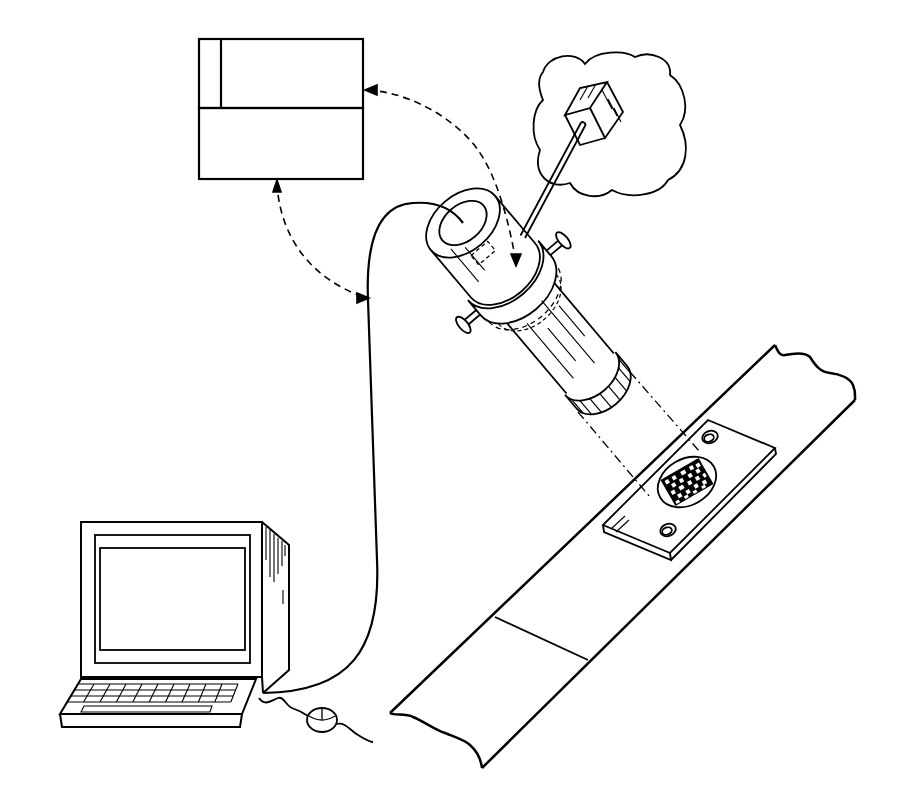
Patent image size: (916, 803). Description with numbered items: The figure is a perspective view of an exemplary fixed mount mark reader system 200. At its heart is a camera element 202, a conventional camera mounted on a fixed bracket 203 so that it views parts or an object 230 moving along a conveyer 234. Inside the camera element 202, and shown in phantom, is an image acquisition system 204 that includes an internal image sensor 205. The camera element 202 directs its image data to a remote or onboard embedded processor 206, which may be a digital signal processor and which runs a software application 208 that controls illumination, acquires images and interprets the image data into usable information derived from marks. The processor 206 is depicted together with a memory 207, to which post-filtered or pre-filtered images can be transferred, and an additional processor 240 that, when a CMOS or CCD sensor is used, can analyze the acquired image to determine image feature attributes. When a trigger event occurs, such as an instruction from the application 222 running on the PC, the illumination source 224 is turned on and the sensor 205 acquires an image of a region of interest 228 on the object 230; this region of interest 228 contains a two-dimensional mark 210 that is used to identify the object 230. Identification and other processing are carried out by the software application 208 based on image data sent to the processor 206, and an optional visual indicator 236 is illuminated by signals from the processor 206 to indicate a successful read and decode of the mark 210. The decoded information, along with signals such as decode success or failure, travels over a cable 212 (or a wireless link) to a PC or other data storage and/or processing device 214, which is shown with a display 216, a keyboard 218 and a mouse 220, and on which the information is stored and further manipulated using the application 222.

The fixed mount mark reader system 200 is at (823, 132).
The camera element 202 is at (516, 224).
The fixed bracket 203 is at (623, 172).
The image acquisition system 204 is at (548, 283).
The sensor 205 is at (520, 340).
The processor 206 is at (356, 68).
The memory 207 is at (208, 73).
The software application 208 is at (255, 180).
The two-dimensional mark 210 is at (708, 492).
The cable 212 is at (378, 518).
The data storage and/or processing device 214 is at (234, 627).
The display 216 is at (213, 535).
The keyboard 218 is at (250, 719).
The mouse 220 is at (334, 727).
The application 222 is at (173, 548).
The illumination source 224 is at (594, 331).
The region of interest 228 is at (678, 513).
The object 230 is at (748, 463).
The conveyer 234 is at (812, 418).
The visual indicator 236 is at (455, 267).
The additional processor 240 is at (356, 52).